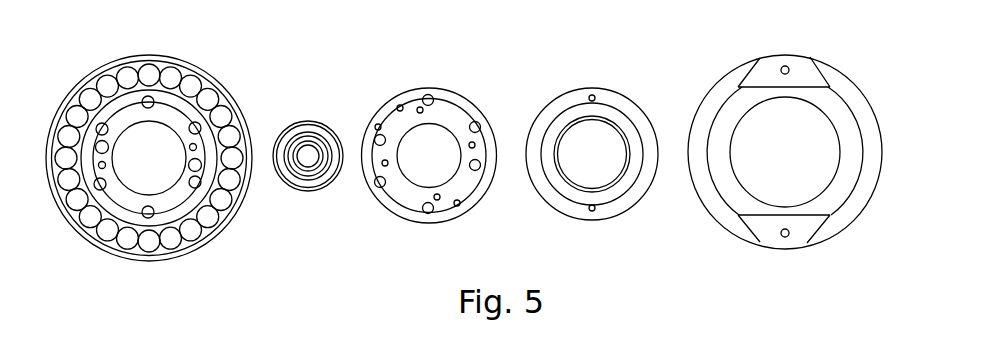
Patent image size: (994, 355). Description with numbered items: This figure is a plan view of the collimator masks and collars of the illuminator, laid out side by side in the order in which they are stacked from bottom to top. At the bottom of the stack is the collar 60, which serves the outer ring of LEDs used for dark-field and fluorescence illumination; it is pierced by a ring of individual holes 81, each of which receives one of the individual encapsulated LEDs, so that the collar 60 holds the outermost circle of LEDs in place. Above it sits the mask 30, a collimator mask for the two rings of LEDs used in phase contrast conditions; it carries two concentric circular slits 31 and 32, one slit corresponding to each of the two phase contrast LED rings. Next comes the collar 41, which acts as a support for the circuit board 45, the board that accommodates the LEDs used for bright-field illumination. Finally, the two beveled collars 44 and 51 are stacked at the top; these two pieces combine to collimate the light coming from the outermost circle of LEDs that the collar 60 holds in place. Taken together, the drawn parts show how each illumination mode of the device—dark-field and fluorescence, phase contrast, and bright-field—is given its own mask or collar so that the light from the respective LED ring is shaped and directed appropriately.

The collar 60 is at (187, 63).
The individual holes 81 is at (205, 98).
The mask 30 is at (295, 124).
The concentric circular slit 31 is at (312, 166).
The concentric circular slit 32 is at (318, 133).
The collar 41 is at (445, 95).
The circuit board 45 is at (455, 120).
The beveled collar 44 is at (583, 93).
The beveled collar 51 is at (728, 83).